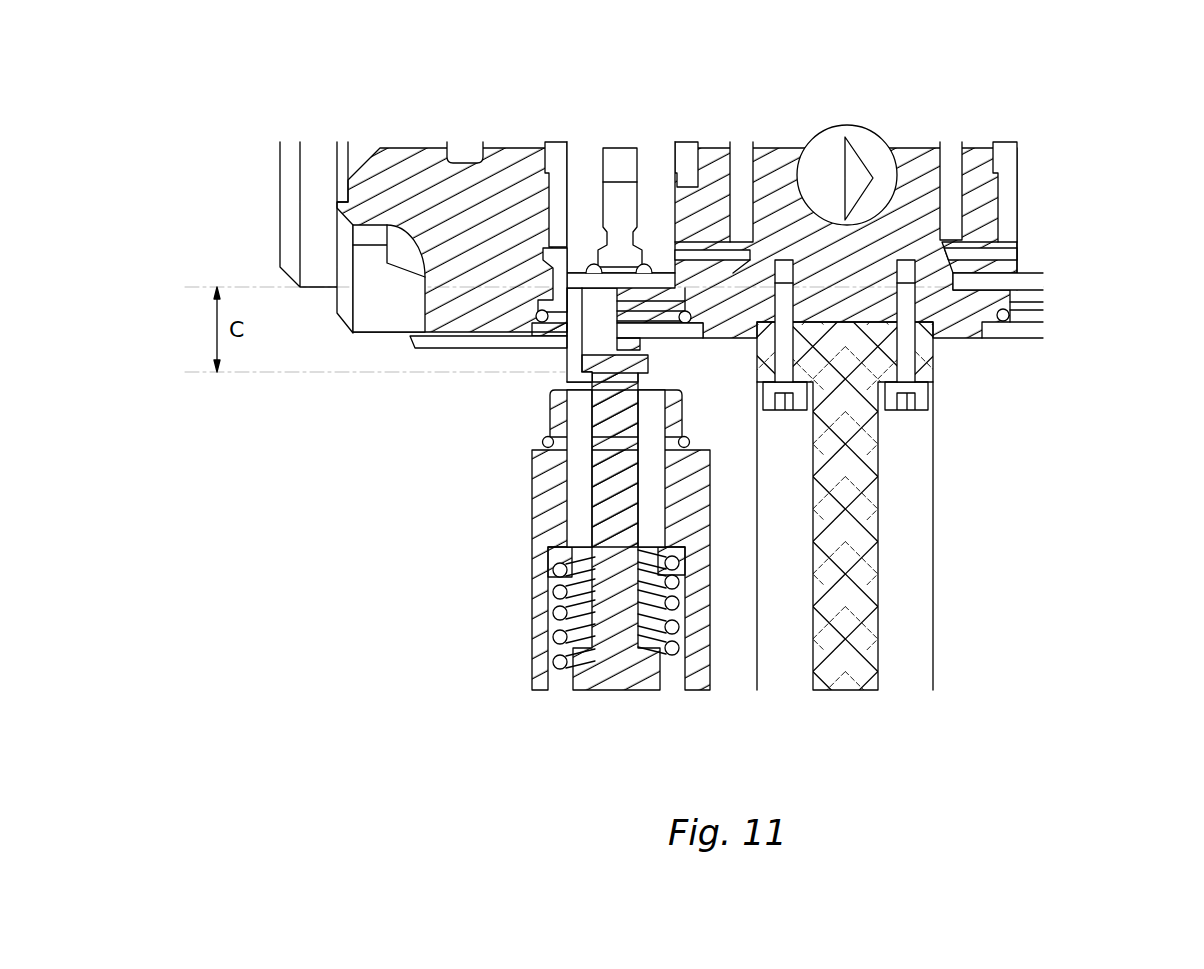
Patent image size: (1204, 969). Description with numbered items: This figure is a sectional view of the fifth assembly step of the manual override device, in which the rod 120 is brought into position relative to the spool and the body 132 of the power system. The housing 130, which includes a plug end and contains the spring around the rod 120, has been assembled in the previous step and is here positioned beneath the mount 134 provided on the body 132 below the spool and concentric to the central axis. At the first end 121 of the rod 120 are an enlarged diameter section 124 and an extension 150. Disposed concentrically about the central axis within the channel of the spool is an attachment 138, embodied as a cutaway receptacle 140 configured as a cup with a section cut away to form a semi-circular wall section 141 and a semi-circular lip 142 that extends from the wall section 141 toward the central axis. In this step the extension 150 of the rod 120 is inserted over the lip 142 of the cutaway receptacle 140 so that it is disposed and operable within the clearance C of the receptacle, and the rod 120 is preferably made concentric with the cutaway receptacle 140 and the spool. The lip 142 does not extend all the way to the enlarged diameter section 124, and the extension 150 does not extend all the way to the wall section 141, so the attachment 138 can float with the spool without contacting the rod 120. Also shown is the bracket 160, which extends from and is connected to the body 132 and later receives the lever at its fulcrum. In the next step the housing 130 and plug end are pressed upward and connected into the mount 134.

The rod 120 is at (617, 638).
The first end 121 is at (578, 422).
The enlarged diameter section 124 is at (580, 436).
The housing 130 is at (722, 478).
The body 132 is at (512, 187).
The mount 134 is at (1015, 291).
The attachment 138 is at (618, 258).
The cutaway receptacle 140 is at (617, 259).
The wall section 141 is at (535, 331).
The lip 142 is at (567, 377).
The extension 150 is at (620, 362).
The bracket 160 is at (908, 529).